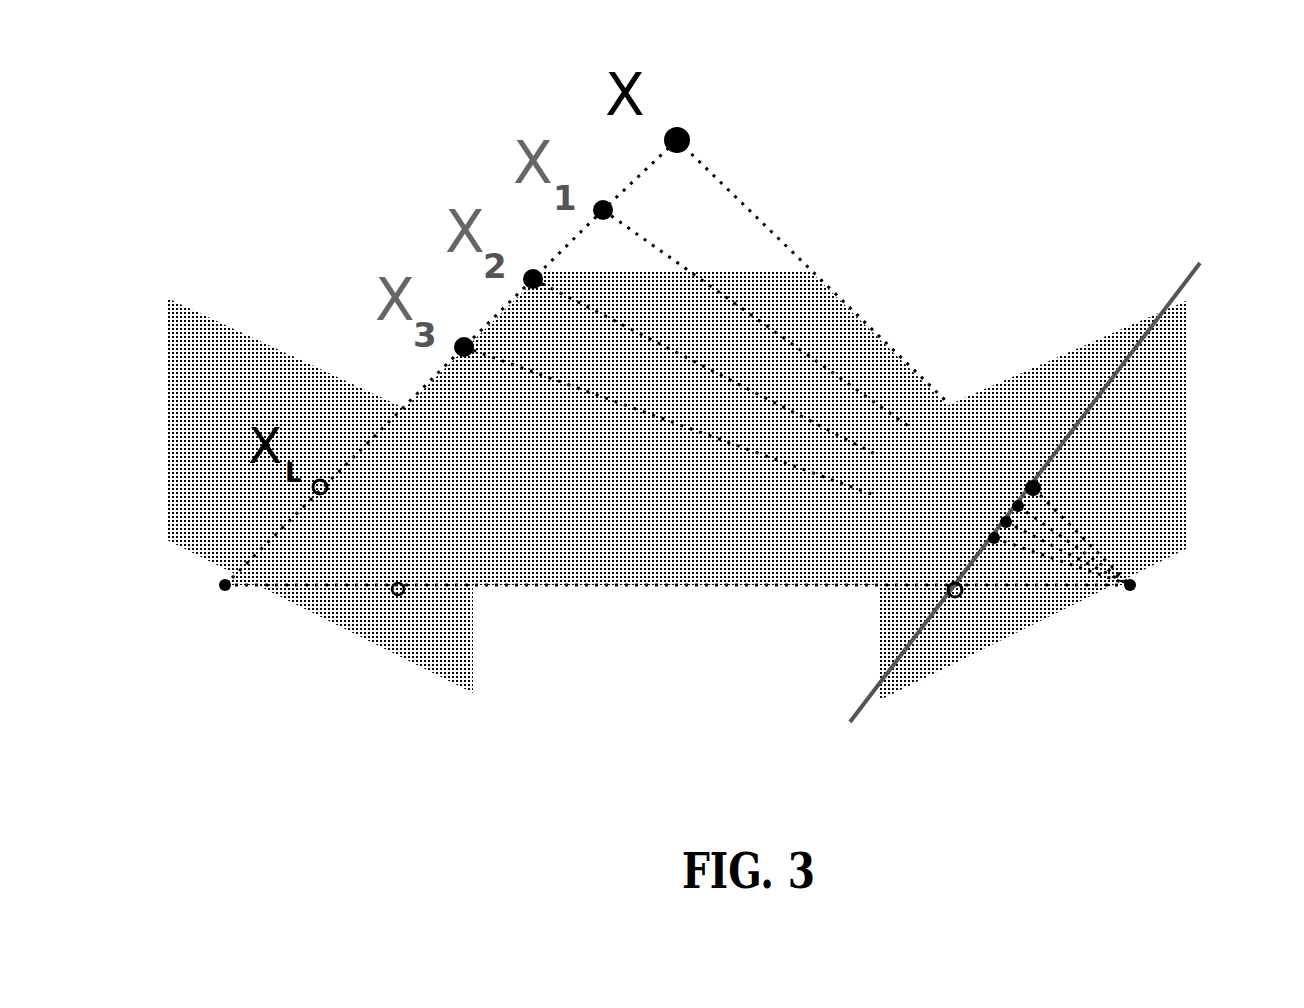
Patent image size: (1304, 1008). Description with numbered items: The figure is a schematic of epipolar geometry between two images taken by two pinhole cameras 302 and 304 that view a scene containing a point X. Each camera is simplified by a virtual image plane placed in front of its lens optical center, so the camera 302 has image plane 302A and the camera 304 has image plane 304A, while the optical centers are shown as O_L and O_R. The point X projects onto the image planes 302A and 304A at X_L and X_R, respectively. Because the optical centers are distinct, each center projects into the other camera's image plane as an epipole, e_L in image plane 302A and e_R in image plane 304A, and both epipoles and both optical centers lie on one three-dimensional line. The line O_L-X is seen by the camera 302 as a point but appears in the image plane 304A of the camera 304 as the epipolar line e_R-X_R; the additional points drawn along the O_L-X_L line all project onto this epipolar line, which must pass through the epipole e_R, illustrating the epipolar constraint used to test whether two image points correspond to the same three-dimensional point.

The pinhole camera 302 is at (228, 590).
The image plane 302A is at (417, 653).
The pinhole camera 304 is at (1133, 590).
The image plane 304A is at (1165, 458).